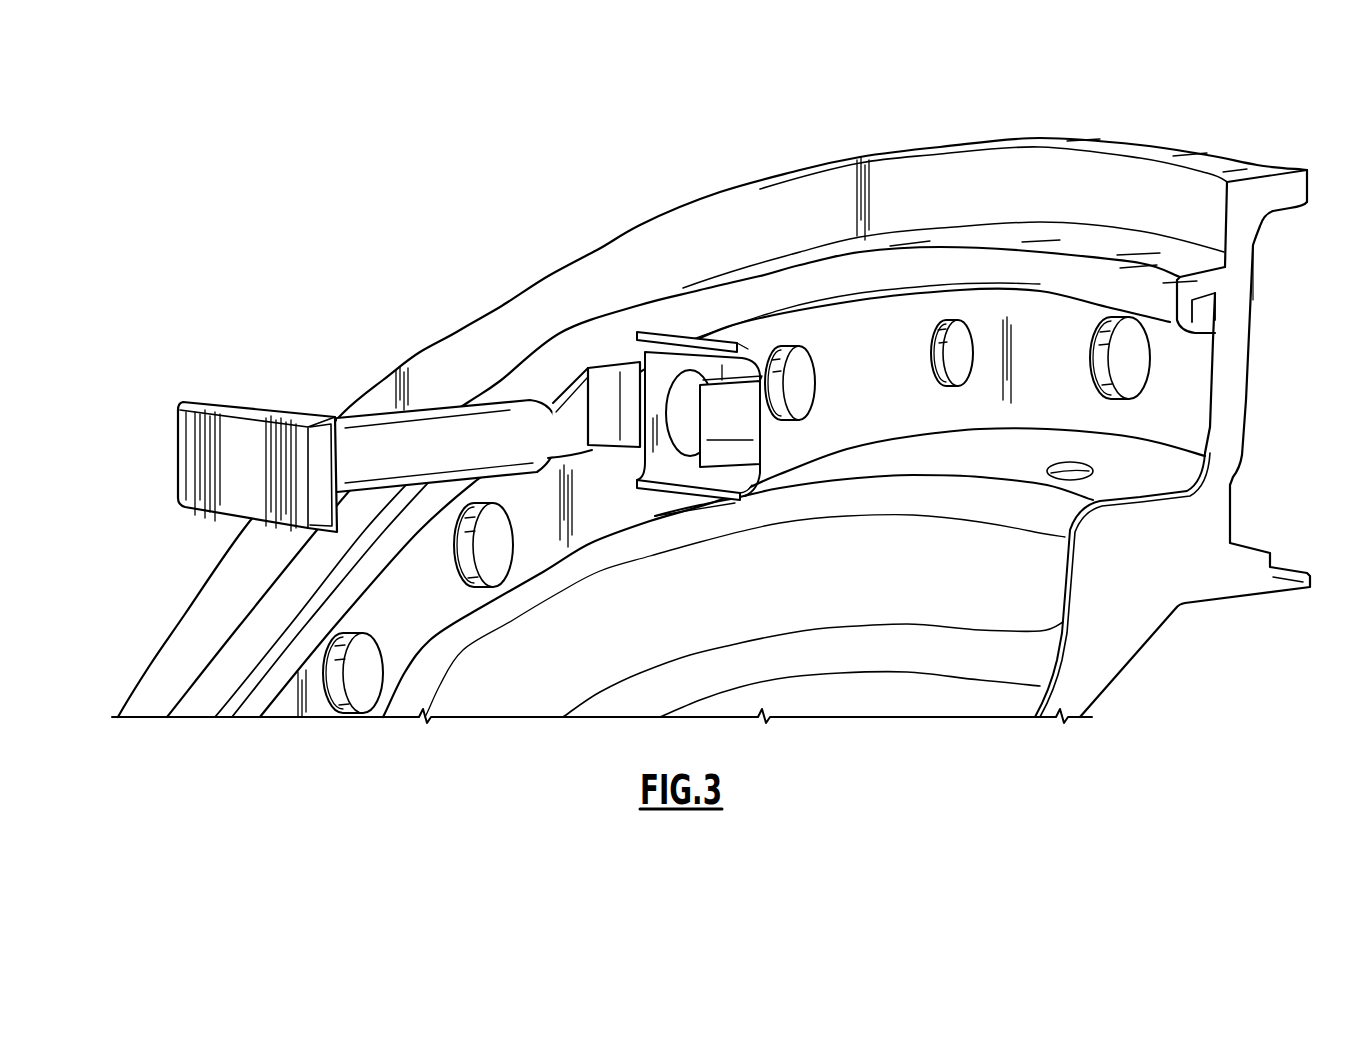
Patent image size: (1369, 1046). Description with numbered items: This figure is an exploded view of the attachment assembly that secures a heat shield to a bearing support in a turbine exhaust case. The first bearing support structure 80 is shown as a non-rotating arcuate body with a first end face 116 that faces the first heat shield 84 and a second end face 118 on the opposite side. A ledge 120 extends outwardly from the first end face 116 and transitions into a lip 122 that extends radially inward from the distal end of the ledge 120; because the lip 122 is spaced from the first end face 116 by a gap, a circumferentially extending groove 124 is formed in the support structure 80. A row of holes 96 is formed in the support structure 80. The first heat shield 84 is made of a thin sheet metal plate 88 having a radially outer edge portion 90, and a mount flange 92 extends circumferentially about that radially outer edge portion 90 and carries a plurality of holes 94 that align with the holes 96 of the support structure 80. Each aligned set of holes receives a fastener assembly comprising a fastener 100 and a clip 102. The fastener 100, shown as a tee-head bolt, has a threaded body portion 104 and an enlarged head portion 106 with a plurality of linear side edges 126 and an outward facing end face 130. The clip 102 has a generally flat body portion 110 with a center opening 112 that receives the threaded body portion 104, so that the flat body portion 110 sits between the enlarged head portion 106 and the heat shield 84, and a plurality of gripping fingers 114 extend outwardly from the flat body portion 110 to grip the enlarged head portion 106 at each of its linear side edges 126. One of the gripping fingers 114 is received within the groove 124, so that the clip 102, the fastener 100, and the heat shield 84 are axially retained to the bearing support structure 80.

The first bearing support structure 80 is at (1275, 192).
The first heat shield 84 is at (1082, 518).
The thin sheet metal plate 88 is at (1063, 627).
The radially outer edge portion 90 is at (1207, 493).
The mount flange 92 is at (1193, 428).
The holes 94 is at (1150, 353).
The holes 96 is at (1090, 381).
The fastener 100 is at (424, 356).
The clip 102 is at (612, 340).
The threaded body portion 104 is at (427, 437).
The enlarged head portion 106 is at (212, 430).
The flat body portion 110 is at (628, 357).
The center opening 112 is at (675, 355).
The gripping fingers 114 is at (607, 382).
The first end face 116 is at (1190, 213).
The second end face 118 is at (1253, 243).
The ledge 120 is at (1112, 257).
The lip 122 is at (1214, 332).
The groove 124 is at (1217, 289).
The linear side edges 126 is at (262, 416).
The outward facing end face 130 is at (227, 455).